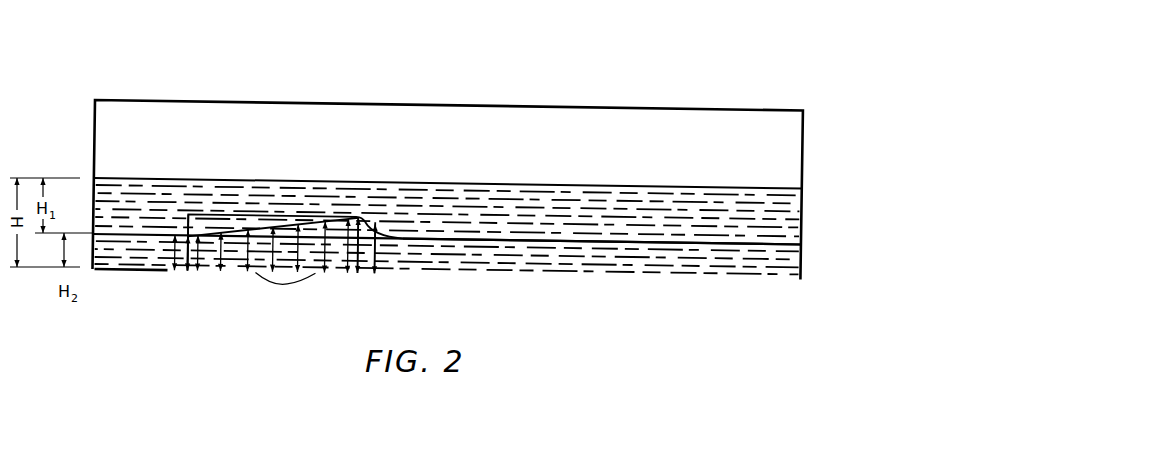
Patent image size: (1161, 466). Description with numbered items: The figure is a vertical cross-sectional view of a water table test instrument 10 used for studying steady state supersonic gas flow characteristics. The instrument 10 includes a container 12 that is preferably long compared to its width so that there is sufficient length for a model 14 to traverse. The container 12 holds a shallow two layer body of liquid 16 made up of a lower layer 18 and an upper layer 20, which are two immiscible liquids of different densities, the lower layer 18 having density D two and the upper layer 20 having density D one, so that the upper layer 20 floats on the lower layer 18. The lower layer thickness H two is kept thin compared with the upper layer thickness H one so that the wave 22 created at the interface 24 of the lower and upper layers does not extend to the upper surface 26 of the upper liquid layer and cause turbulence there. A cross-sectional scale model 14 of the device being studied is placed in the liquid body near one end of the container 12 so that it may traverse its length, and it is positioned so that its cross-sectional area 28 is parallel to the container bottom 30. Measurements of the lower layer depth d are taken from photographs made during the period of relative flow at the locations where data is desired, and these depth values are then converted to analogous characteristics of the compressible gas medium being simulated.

The water table test instrument 10 is at (738, 72).
The container 12 is at (656, 108).
The model 14 is at (188, 231).
The two layer body of liquid 16 is at (802, 260).
The lower layer 18 is at (558, 276).
The upper layer 20 is at (558, 195).
The wave 22 is at (381, 227).
The interface 24 is at (485, 243).
The upper surface 26 is at (605, 186).
The cross-sectional area 28 is at (237, 213).
The container bottom 30 is at (125, 262).